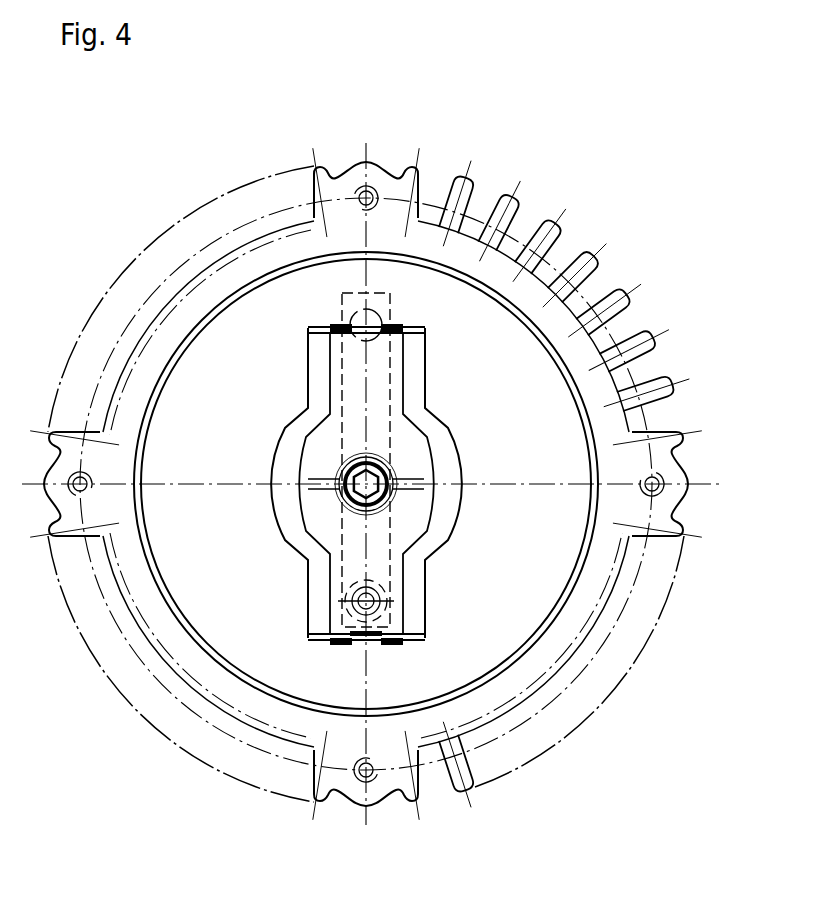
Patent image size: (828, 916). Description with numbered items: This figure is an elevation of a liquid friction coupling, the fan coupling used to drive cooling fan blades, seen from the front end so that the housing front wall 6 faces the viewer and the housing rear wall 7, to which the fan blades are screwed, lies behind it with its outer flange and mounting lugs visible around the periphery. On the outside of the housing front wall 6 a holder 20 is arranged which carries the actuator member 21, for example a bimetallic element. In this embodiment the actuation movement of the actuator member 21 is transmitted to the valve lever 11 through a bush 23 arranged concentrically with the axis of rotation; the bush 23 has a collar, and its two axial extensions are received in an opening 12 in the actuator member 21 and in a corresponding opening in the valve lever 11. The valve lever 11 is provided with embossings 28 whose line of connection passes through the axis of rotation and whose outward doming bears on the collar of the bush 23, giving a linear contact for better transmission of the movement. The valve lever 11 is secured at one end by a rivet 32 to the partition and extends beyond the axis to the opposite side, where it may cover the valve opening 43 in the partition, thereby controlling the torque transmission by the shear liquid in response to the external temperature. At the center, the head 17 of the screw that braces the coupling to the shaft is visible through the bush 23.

The housing front wall 6 is at (533, 616).
The housing rear wall 7 is at (218, 277).
The valve lever 11 is at (391, 304).
The opening 12 is at (342, 452).
The head 17 is at (382, 494).
The holder 20 is at (417, 369).
The actuator member 21 is at (392, 352).
The bush 23 is at (340, 474).
The embossings 28 is at (398, 478).
The rivet 32 is at (352, 607).
The valve opening 43 is at (345, 296).